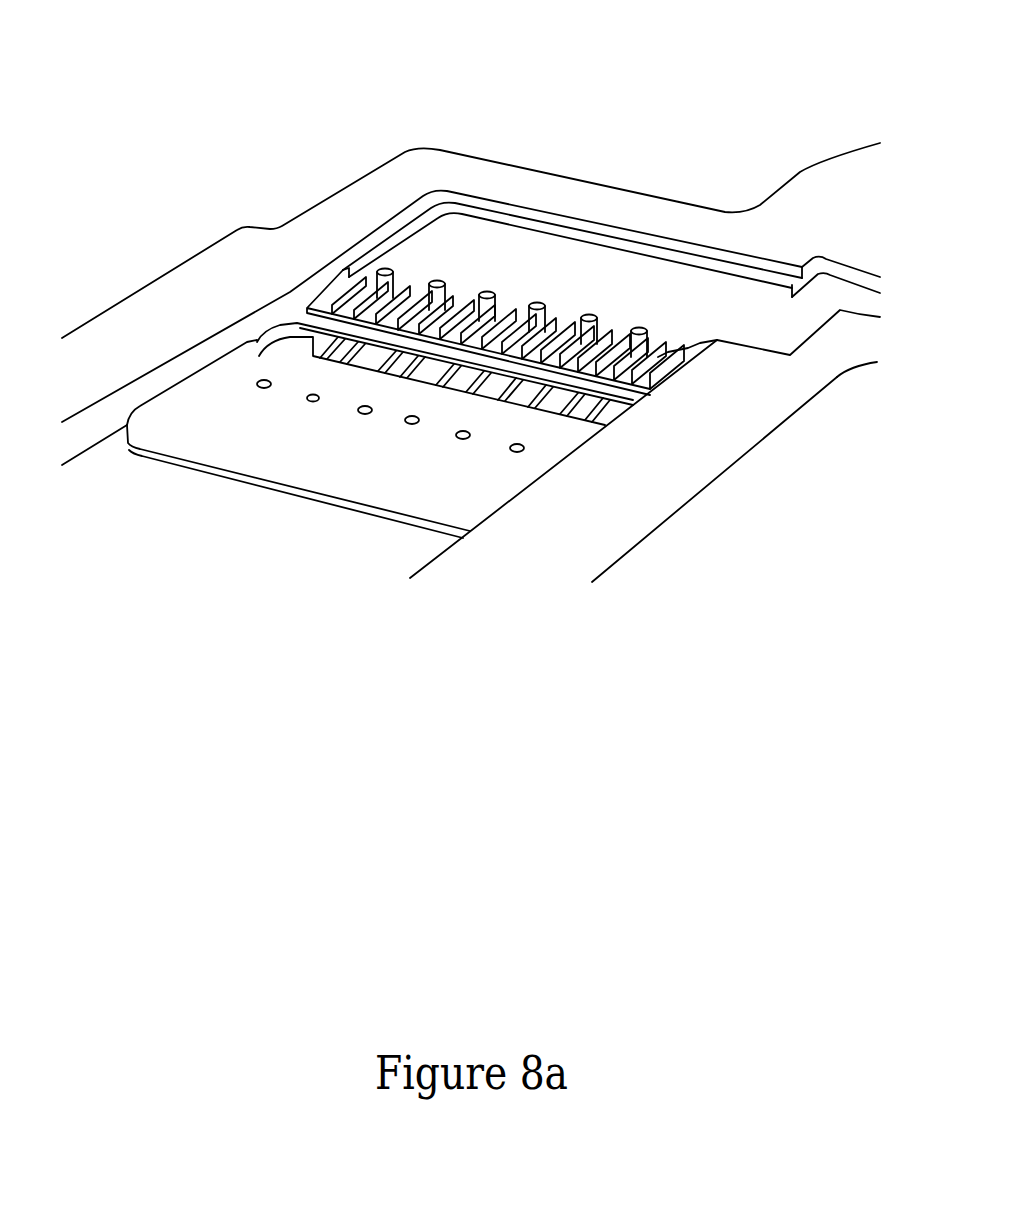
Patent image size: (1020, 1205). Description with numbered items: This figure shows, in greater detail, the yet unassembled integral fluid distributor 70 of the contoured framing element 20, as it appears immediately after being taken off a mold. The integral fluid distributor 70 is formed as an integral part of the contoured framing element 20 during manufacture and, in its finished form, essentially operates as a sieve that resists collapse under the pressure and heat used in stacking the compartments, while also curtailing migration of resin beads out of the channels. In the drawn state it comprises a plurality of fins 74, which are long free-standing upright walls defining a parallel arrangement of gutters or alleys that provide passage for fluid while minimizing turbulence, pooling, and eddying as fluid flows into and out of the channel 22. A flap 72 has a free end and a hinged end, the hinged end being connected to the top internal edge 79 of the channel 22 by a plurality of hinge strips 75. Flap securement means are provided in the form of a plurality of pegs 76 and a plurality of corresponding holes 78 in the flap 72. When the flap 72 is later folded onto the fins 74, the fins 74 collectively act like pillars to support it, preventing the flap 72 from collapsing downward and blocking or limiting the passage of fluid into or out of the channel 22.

The integral fluid distributor 70 is at (441, 133).
The contoured framing element 20 is at (875, 218).
The channel 22 is at (270, 573).
The flap 72 is at (327, 451).
The fins 74 is at (397, 290).
The hinge strips 75 is at (275, 338).
The pegs 76 is at (590, 325).
The holes 78 is at (410, 416).
The top internal edge 79 is at (395, 373).